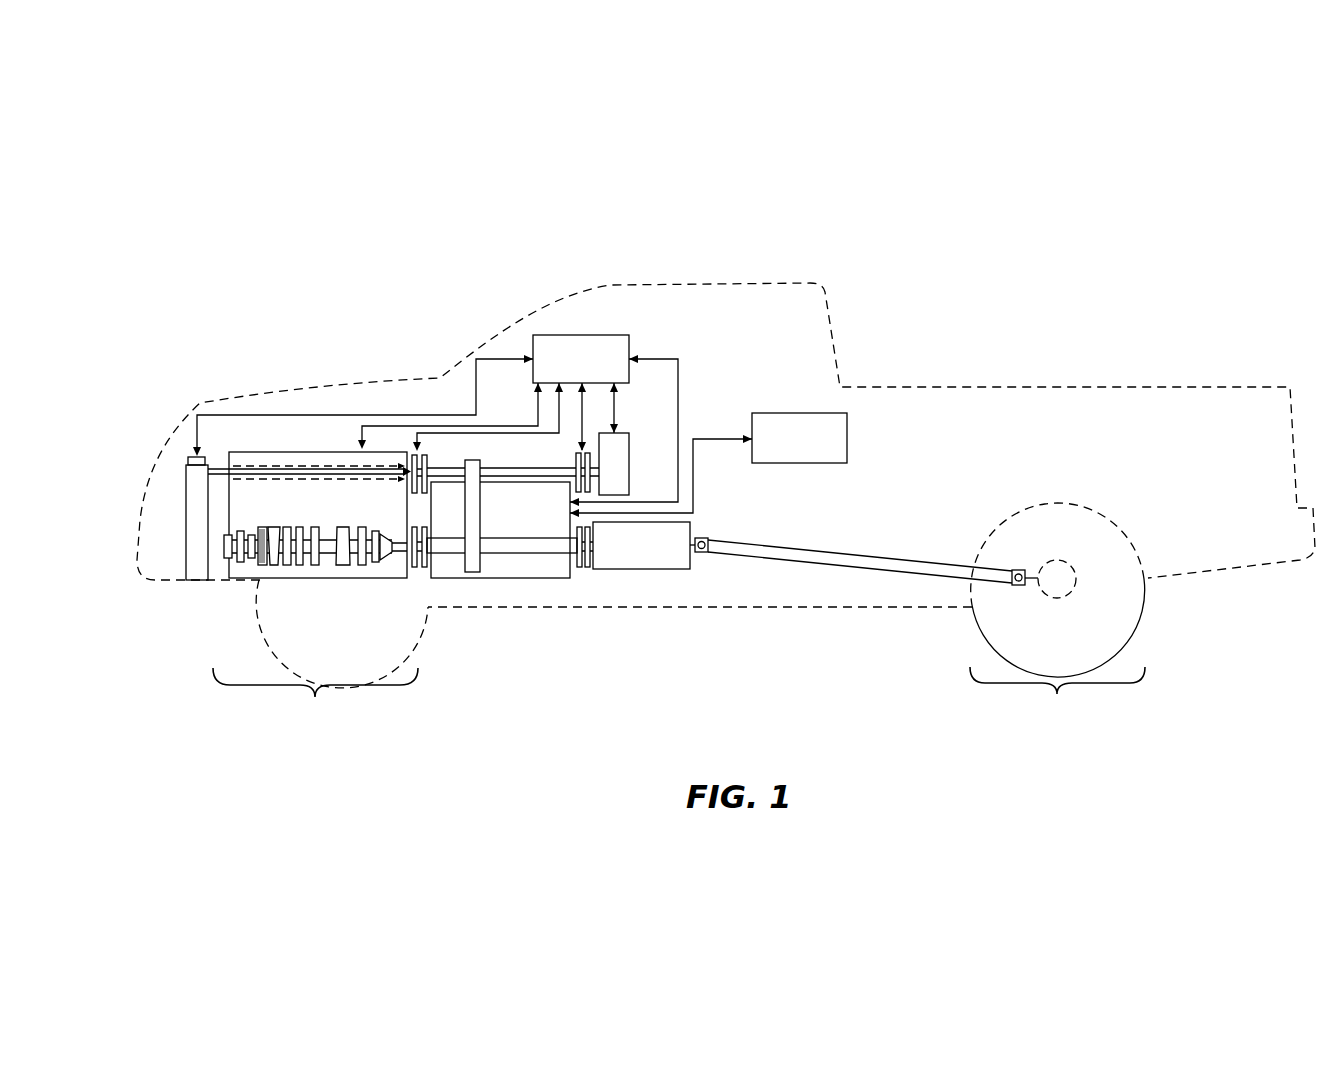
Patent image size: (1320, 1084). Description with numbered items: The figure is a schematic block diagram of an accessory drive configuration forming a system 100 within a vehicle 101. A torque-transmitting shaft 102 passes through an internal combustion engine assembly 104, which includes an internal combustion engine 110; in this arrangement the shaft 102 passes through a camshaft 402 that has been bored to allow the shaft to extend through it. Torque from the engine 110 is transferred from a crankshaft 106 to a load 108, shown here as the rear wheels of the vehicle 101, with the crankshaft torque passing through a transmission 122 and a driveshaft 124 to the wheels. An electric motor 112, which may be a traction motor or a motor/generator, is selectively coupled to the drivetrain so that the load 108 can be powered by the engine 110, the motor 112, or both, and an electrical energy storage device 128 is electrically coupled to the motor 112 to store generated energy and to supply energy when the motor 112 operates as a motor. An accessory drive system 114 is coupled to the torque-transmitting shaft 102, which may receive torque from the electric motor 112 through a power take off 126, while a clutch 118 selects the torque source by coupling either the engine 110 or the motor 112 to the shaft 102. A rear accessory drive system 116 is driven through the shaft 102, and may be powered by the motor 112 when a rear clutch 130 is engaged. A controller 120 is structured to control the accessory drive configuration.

The system 100 is at (283, 290).
The vehicle 101 is at (706, 284).
The torque-transmitting shaft 102 is at (217, 468).
The internal combustion engine assembly 104 is at (320, 657).
The crankshaft 106 is at (261, 528).
The load 108 is at (1057, 618).
The internal combustion engine 110 is at (332, 452).
The electric motor 112 is at (520, 578).
The accessory drive system 114 is at (186, 488).
The rear accessory drive system 116 is at (630, 467).
The clutch 118 is at (420, 452).
The controller 120 is at (581, 359).
The transmission 122 is at (641, 545).
The driveshaft 124 is at (790, 548).
The power take off 126 is at (482, 495).
The electrical energy storage device 128 is at (799, 438).
The rear clutch 130 is at (590, 463).
The camshaft 402 is at (352, 463).